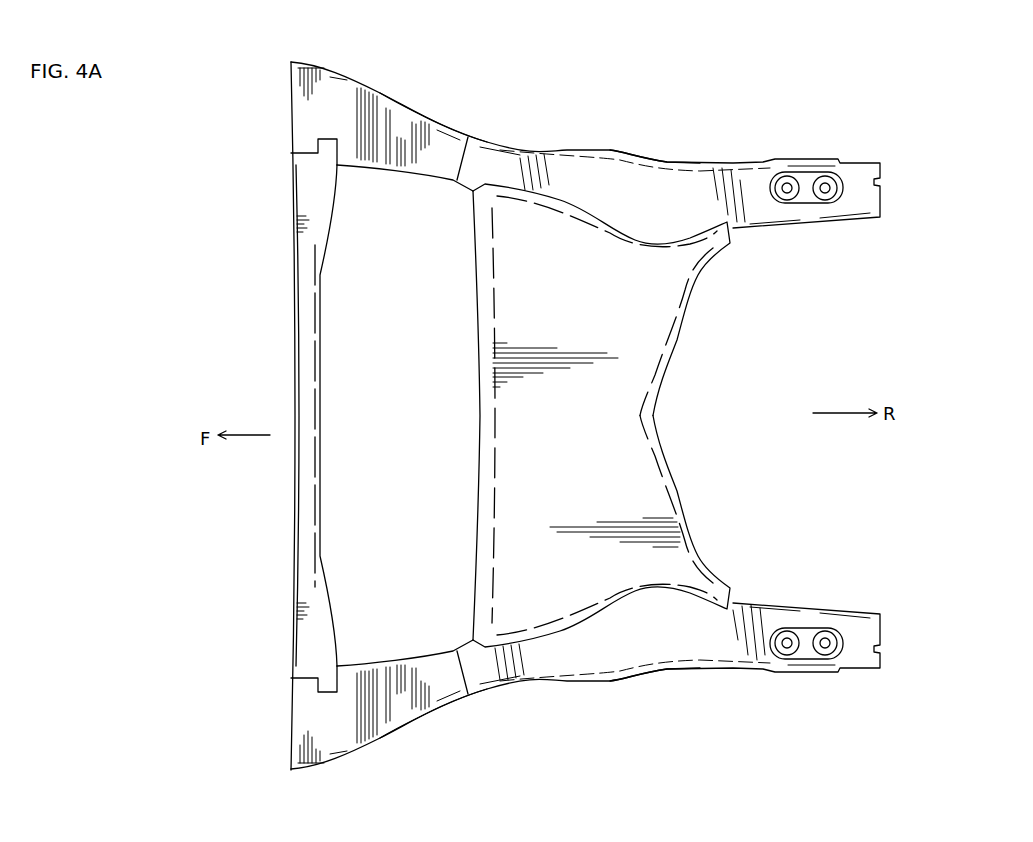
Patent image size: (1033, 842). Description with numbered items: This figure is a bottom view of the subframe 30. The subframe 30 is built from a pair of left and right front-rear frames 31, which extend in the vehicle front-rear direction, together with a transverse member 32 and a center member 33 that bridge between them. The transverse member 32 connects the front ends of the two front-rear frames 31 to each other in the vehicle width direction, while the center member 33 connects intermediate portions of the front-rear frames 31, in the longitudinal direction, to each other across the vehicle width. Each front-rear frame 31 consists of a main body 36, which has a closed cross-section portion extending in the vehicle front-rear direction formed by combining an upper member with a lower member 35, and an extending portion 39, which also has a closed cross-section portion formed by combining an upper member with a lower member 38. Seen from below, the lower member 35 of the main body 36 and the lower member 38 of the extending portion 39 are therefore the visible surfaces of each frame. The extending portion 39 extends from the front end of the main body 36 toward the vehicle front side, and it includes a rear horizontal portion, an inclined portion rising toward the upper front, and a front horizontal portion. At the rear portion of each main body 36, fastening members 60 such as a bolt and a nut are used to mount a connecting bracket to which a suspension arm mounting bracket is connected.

The subframe 30 is at (384, 52).
The front-rear frame 31 is at (613, 139).
The transverse member 32 is at (303, 352).
The center member 33 is at (470, 432).
The lower member 35 is at (650, 214).
The main body 36 is at (673, 154).
The lower member 38 is at (383, 160).
The extending portion 39 is at (411, 100).
The fastening member 60 is at (825, 175).